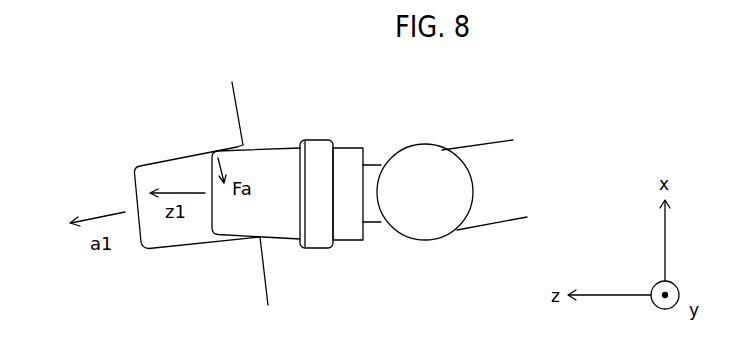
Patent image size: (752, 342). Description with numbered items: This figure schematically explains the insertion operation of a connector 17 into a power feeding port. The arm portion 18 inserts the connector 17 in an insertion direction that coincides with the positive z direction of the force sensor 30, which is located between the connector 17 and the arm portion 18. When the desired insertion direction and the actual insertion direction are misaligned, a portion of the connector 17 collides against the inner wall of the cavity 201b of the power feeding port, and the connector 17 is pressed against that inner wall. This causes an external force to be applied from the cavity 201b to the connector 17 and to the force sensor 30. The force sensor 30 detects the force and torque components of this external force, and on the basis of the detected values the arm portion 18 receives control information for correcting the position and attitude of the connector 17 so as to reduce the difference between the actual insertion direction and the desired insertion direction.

The connector 17 is at (283, 158).
The arm portion 18 is at (490, 153).
The force sensor 30 is at (348, 155).
The cavity 201b is at (188, 247).